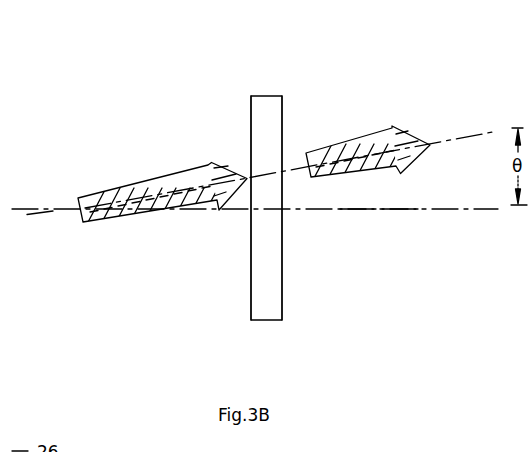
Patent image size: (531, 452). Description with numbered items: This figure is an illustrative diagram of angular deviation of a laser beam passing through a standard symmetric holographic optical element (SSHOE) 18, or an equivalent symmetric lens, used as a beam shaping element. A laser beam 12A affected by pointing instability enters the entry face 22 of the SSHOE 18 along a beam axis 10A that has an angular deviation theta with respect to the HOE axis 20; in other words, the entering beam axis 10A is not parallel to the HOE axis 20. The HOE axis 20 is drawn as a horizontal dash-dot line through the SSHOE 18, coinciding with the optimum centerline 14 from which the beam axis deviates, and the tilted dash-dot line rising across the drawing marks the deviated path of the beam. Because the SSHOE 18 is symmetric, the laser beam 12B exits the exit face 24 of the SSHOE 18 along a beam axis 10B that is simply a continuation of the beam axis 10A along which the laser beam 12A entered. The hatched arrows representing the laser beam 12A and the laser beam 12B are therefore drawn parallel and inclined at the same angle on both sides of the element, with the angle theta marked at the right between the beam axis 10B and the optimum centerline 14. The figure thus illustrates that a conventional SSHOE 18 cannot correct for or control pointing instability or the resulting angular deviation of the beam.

The beam axis 10A is at (47, 213).
The beam axis 10B is at (465, 137).
The laser beam 12A is at (148, 183).
The laser beam 12B is at (340, 146).
The optimum centerline 14 is at (34, 211).
The standard symmetric holographic optical element 18 is at (264, 84).
The HOE axis 20 is at (385, 209).
The entry face 22 is at (250, 113).
The exit face 24 is at (282, 118).